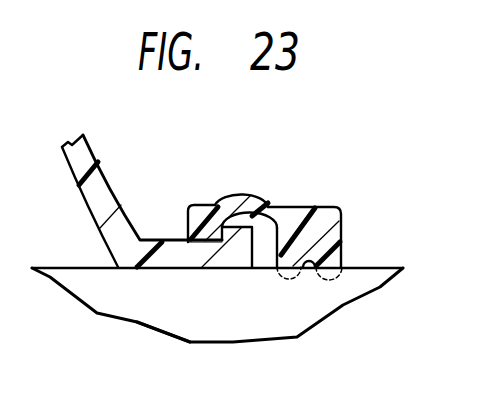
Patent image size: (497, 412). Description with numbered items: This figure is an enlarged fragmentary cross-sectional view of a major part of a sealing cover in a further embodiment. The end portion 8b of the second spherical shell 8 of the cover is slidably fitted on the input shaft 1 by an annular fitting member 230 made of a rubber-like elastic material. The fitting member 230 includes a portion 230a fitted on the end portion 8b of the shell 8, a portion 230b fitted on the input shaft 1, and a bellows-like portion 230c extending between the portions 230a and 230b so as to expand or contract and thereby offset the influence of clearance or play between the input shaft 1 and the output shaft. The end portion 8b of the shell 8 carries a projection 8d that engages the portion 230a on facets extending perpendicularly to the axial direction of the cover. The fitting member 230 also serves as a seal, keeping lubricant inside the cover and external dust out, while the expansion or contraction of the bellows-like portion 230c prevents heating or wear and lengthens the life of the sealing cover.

The input shaft 1 is at (353, 293).
The second spherical shell 8 is at (157, 192).
The end portion 8b is at (162, 320).
The projection 8d is at (214, 264).
The annular fitting member 230 is at (305, 231).
The portion fitted on the end portion 230a is at (216, 268).
The portion fitted on the input shaft 230b is at (314, 206).
The bellows-like portion 230c is at (251, 191).